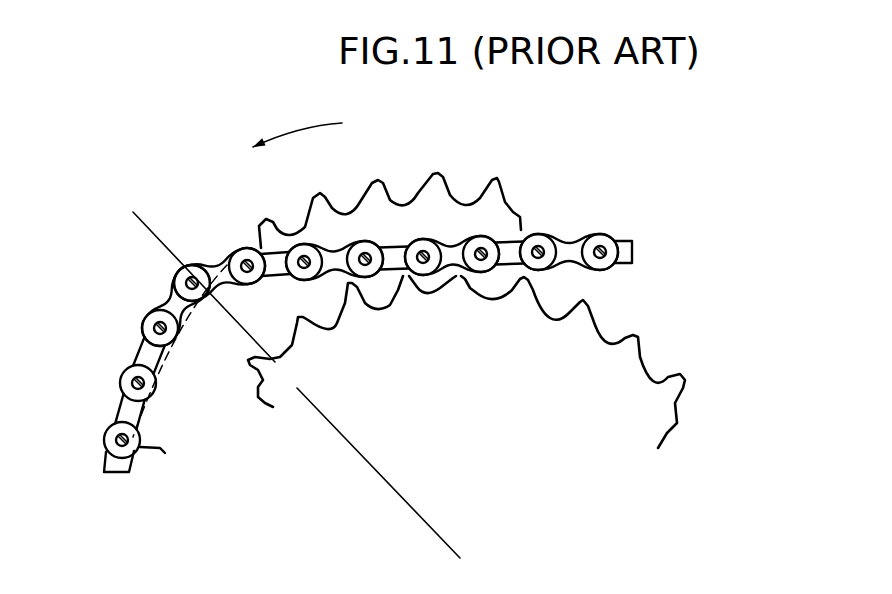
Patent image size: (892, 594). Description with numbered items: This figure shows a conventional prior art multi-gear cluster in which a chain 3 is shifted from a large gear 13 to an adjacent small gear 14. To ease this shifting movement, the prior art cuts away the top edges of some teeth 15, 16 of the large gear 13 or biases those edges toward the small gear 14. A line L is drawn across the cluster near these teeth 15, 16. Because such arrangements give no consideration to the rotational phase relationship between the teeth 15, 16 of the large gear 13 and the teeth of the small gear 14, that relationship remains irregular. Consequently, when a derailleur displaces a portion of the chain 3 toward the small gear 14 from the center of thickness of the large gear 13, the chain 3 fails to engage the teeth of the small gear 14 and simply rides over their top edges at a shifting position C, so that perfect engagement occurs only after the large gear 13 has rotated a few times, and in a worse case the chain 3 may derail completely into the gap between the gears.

The chain 3 is at (384, 311).
The large gear 13 is at (507, 183).
The small gear 14 is at (640, 320).
The tooth of the large gear 15 is at (170, 300).
The tooth of the large gear 16 is at (227, 265).
The reference line L is at (283, 365).
The shifting position C is at (440, 288).